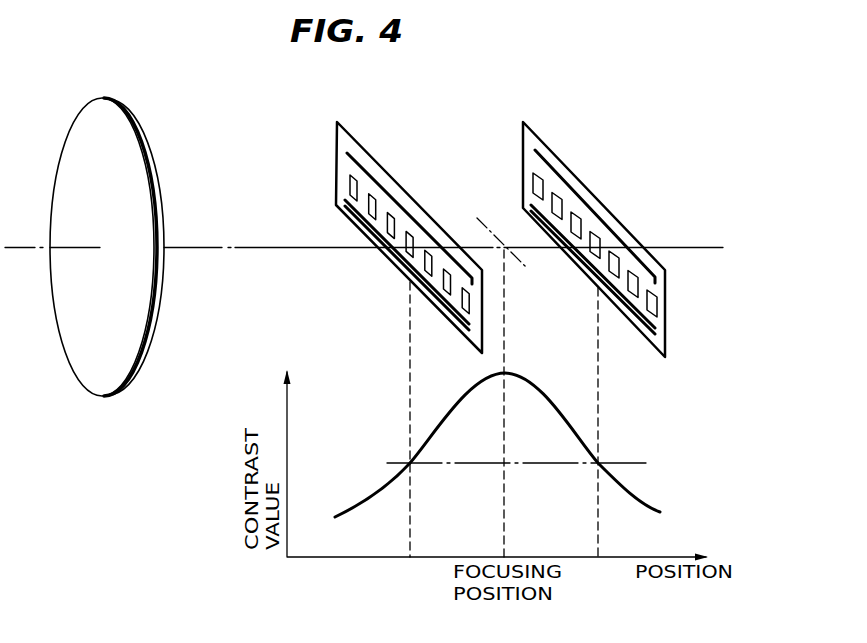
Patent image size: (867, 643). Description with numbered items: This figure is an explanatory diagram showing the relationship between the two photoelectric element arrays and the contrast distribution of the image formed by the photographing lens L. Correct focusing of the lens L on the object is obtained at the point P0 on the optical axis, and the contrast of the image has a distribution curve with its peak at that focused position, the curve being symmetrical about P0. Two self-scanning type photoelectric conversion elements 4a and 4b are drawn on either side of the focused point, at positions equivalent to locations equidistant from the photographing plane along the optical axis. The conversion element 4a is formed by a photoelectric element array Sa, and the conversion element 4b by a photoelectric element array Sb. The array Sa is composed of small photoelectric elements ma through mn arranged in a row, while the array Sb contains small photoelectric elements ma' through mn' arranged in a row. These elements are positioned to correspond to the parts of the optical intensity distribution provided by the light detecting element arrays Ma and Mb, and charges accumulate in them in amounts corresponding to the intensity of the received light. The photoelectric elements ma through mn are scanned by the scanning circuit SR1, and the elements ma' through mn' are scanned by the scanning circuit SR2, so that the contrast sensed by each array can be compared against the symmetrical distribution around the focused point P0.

The photographing lens L is at (82, 128).
The self-scanning type photoelectric conversion element 4a is at (377, 160).
The self-scanning type photoelectric conversion element 4b is at (572, 166).
The light detecting element array Ma is at (346, 152).
The photoelectric element ma is at (369, 216).
The photoelectric element array Sa is at (348, 186).
The scanning circuit SR1 is at (345, 211).
The light detecting element array Mb is at (534, 150).
The photoelectric element ma' is at (554, 215).
The photoelectric element array Sb is at (531, 183).
The scanning circuit SR2 is at (531, 207).
The focused point P0 is at (505, 247).
The photoelectric element mn is at (505, 308).
The photoelectric element mn' is at (684, 315).